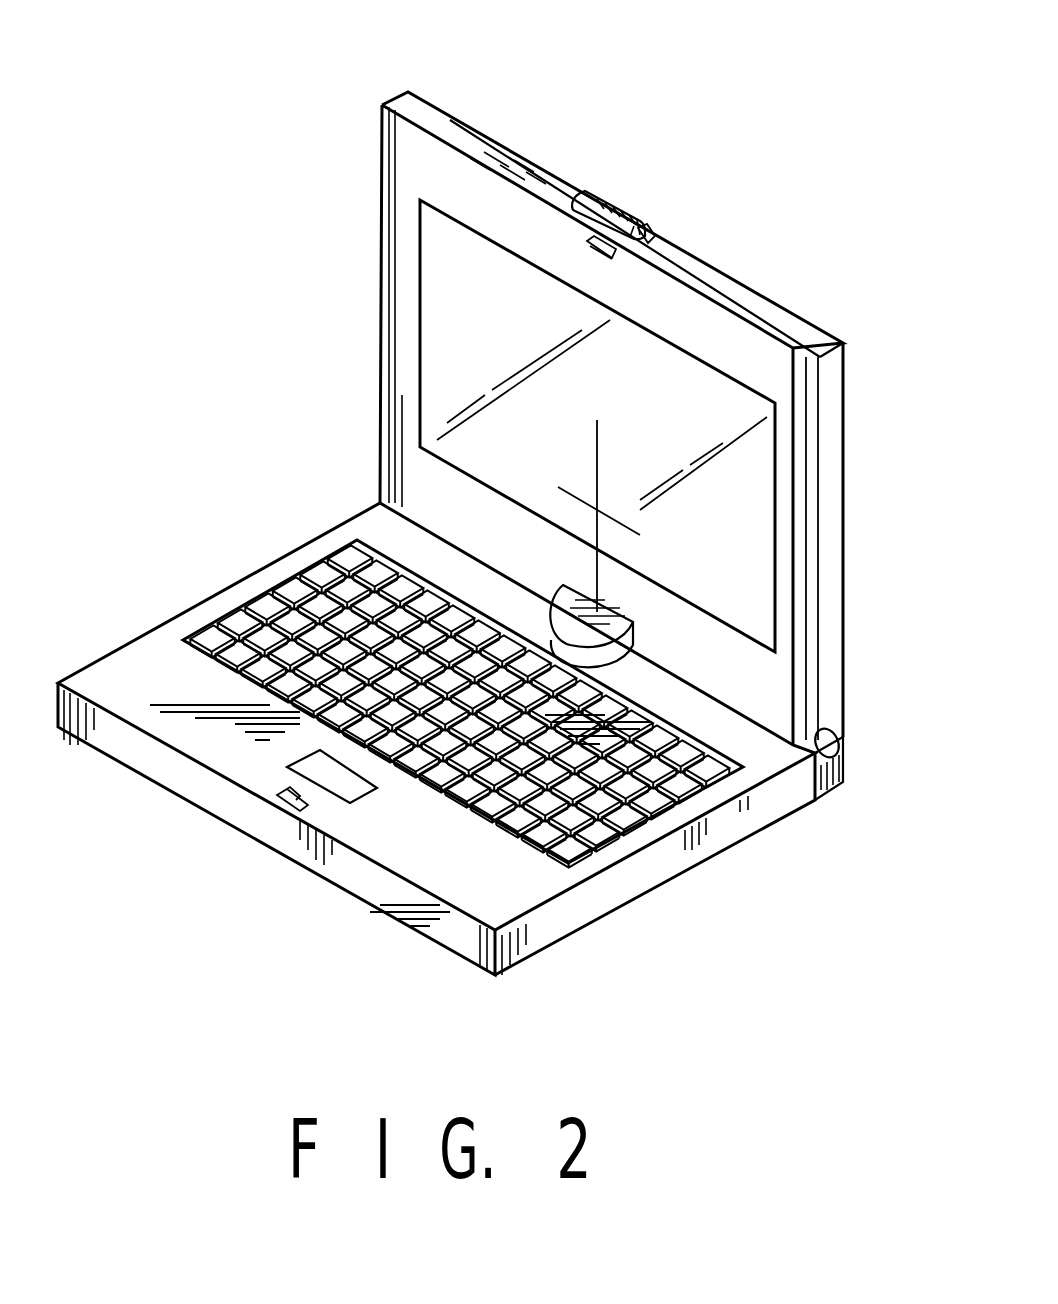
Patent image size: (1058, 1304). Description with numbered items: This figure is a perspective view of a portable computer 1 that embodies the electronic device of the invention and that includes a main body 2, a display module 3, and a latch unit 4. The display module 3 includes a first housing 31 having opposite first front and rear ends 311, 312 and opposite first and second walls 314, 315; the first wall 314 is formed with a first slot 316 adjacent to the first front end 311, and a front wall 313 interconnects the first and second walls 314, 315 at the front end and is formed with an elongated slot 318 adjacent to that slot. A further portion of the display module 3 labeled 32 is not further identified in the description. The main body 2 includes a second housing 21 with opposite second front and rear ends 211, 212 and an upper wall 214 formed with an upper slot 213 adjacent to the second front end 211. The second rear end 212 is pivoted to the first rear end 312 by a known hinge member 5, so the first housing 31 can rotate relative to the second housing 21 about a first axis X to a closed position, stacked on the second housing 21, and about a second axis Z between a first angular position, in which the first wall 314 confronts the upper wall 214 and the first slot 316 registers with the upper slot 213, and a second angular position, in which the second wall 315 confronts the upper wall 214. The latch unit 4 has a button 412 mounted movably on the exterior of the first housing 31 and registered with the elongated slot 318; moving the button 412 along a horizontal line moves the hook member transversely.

The portable computer 1 is at (844, 178).
The main body 2 is at (230, 568).
The second housing 21 is at (720, 828).
The second front end 211 is at (375, 895).
The second rear end 212 is at (768, 760).
The upper slot 213 is at (285, 802).
The upper wall 214 is at (528, 906).
The display module 3 is at (363, 360).
The first housing 31 is at (378, 442).
The first front end 311 is at (722, 330).
The first rear end 312 is at (840, 734).
The front wall 313 is at (822, 330).
The first wall 314 is at (405, 157).
The second wall 315 is at (437, 103).
The first slot 316 is at (695, 270).
The elongated slot 318 is at (643, 232).
The side wall of display housing 32 is at (845, 470).
The latch unit 4 is at (567, 178).
The button 412 is at (598, 195).
The hinge member 5 is at (550, 618).